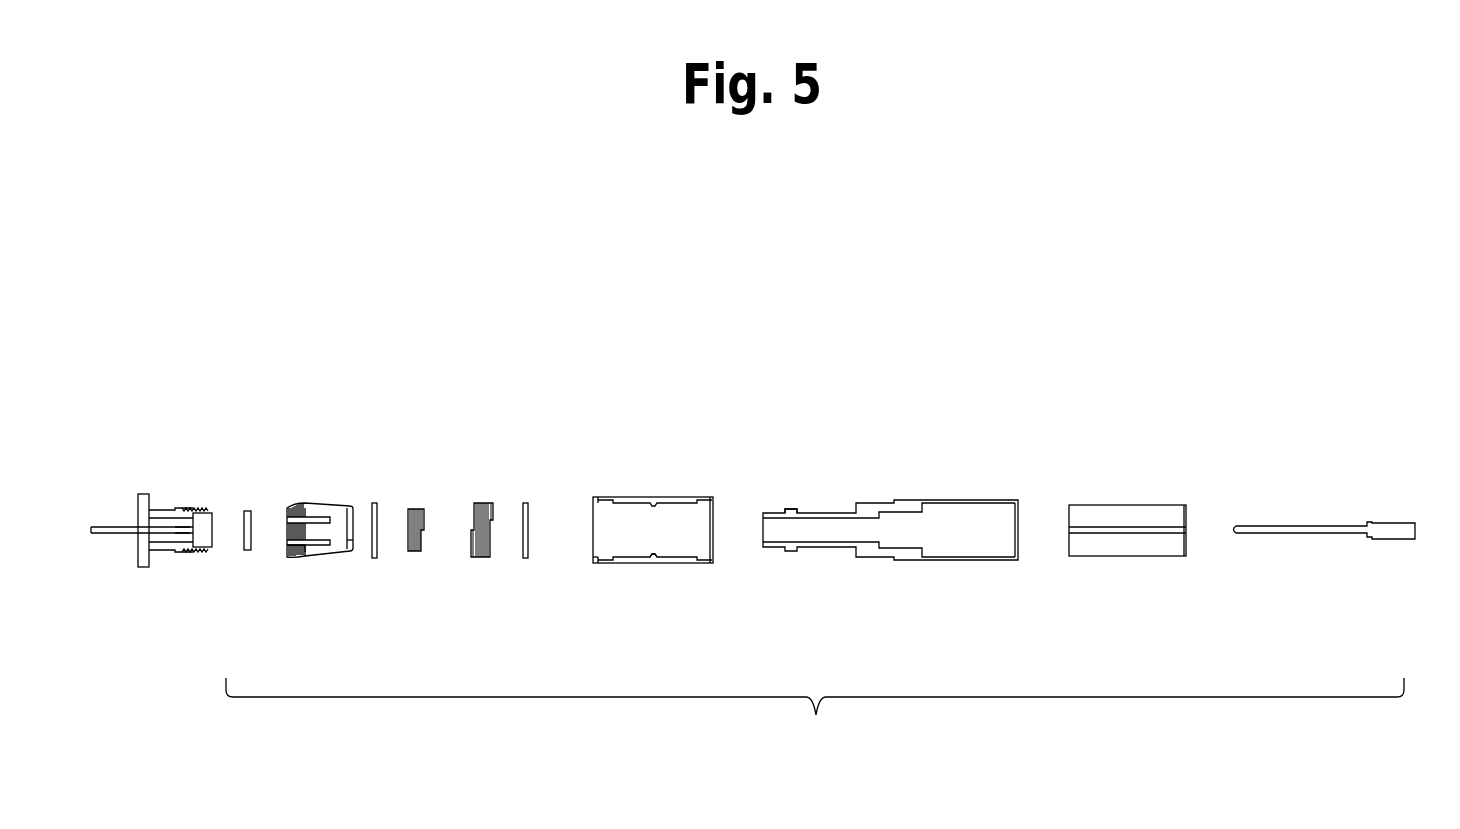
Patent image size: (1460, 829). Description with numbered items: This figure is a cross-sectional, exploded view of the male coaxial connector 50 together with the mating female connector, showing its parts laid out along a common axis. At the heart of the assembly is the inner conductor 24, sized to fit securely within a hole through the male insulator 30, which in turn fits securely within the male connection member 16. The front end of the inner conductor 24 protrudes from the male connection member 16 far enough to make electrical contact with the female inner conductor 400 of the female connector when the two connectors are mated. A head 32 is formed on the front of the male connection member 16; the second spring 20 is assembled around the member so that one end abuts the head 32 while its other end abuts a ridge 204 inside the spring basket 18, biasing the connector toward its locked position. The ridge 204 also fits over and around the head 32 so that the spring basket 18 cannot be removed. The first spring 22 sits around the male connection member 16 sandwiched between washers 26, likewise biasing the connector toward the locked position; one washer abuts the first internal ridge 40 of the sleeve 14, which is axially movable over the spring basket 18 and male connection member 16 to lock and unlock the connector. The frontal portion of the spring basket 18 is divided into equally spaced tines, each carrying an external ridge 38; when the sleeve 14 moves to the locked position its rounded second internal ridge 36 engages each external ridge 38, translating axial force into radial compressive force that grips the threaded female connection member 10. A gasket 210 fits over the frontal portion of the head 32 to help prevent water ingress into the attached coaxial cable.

The female connection member 10 is at (187, 513).
The female inner conductor 400 is at (188, 531).
The gasket 210 is at (246, 510).
The spring basket 18 is at (303, 507).
The external ridge 38 is at (287, 558).
The ridge 204 is at (345, 557).
The washers 26 is at (375, 558).
The second spring 20 is at (415, 508).
The first spring 22 is at (476, 503).
The sleeve 14 is at (656, 502).
The second internal ridge 36 is at (594, 561).
The first internal ridge 40 is at (656, 559).
The male connection member 16 is at (922, 502).
The head 32 is at (790, 509).
The male insulator 30 is at (1085, 505).
The inner conductor 24 is at (1383, 522).
The male coaxial connector 50 is at (815, 713).